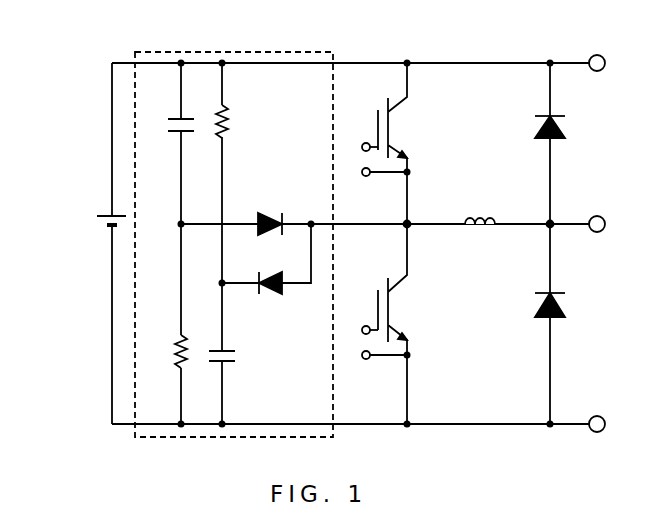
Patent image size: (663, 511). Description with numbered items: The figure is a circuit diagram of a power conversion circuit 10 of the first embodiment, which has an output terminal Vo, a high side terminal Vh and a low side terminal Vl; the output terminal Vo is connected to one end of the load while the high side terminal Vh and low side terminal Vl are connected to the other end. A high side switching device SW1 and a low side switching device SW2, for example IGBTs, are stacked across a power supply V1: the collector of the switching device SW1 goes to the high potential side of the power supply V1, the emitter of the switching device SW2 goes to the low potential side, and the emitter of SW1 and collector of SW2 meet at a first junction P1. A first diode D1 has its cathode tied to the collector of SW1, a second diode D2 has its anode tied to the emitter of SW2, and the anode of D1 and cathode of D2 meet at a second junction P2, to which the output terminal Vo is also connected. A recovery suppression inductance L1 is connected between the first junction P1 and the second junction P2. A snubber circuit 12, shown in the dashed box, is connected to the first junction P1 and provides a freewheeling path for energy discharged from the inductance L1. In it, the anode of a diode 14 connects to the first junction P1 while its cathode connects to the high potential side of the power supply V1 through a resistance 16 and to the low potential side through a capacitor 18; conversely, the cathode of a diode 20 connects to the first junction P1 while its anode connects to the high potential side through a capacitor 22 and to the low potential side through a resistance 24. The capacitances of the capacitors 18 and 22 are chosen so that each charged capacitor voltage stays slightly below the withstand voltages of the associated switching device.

The power conversion circuit 10 is at (44, 110).
The snubber circuit 12 is at (310, 50).
The diode 14 is at (268, 298).
The resistance 16 is at (232, 118).
The capacitor 18 is at (236, 354).
The diode 20 is at (268, 206).
The capacitor 22 is at (177, 137).
The resistance 24 is at (176, 352).
The power supply V1 is at (98, 224).
The high side switching device SW1 is at (403, 132).
The low side switching device SW2 is at (403, 312).
The first diode D1 is at (566, 124).
The second diode D2 is at (566, 302).
The recovery suppression inductance L1 is at (486, 233).
The first junction P1 is at (410, 228).
The second junction P2 is at (553, 228).
The high side terminal Vh is at (612, 63).
The output terminal Vo is at (612, 224).
The low side terminal Vl is at (610, 424).